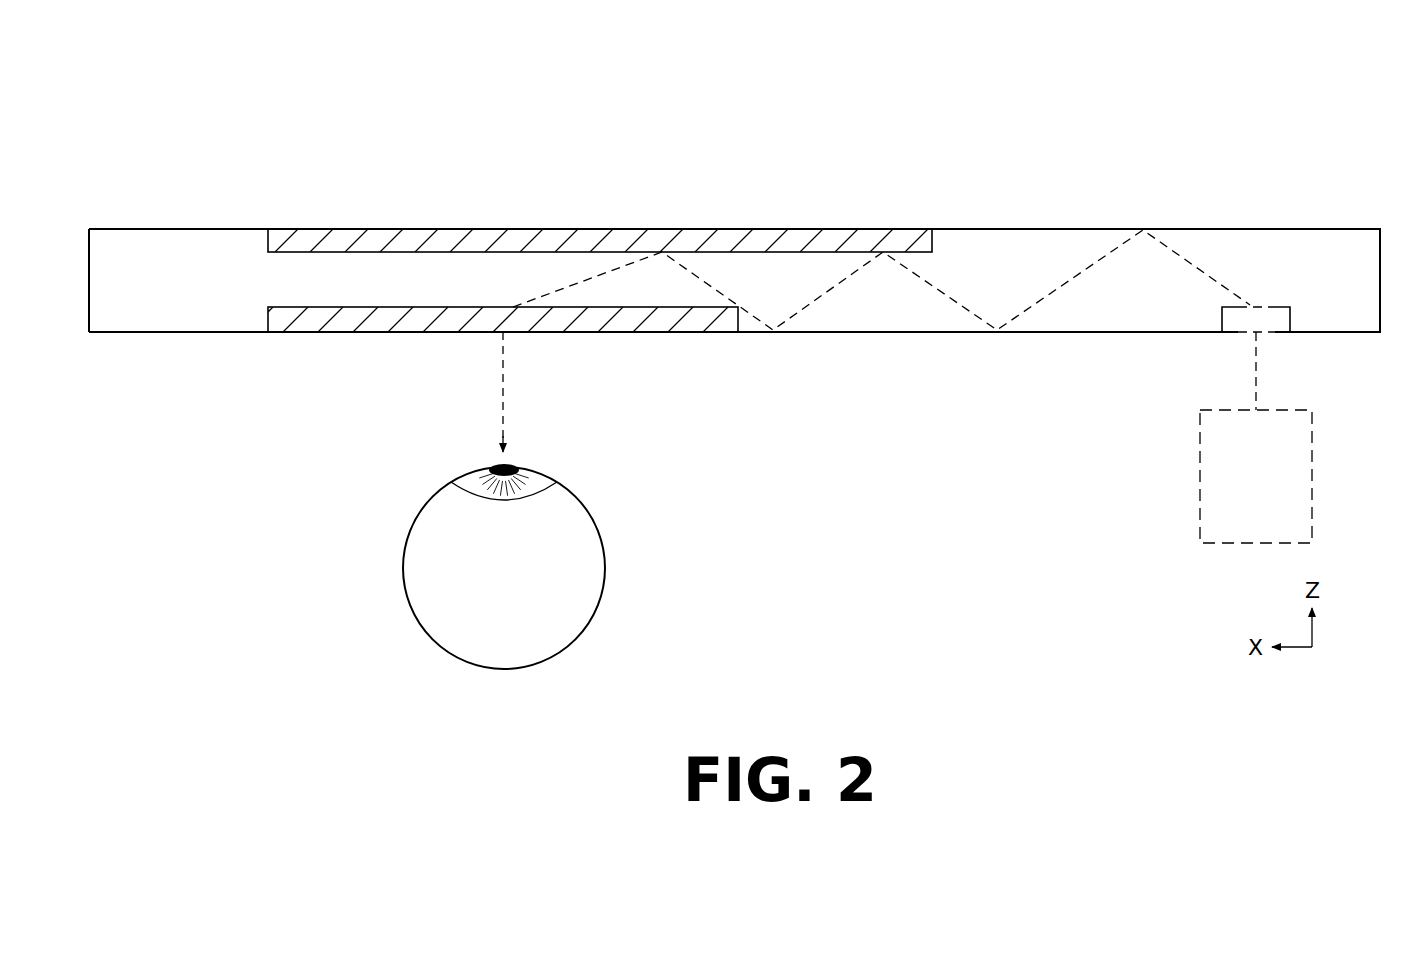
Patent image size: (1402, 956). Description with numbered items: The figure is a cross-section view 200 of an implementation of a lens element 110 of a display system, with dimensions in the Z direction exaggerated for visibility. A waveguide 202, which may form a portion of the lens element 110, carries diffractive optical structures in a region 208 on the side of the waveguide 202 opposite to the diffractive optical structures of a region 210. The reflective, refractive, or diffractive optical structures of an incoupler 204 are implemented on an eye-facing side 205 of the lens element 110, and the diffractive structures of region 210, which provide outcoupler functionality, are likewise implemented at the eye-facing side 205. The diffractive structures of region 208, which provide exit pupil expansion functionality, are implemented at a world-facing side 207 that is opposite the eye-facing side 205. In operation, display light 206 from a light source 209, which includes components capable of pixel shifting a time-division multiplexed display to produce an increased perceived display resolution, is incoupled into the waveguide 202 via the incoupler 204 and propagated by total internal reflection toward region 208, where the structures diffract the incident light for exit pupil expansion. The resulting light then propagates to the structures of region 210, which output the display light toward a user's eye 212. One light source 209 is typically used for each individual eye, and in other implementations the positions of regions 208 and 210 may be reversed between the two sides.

The cross-section view 200 is at (380, 128).
The lens element 110 is at (1012, 226).
The eye-facing side 205 is at (188, 332).
The world-facing side 207 is at (1268, 228).
The region 208 is at (697, 238).
The region 210 is at (658, 321).
The waveguide 202 is at (885, 306).
The incoupler 204 is at (1288, 319).
The display light 206 is at (1258, 370).
The light source 209 is at (1275, 493).
The user's eye 212 is at (404, 566).